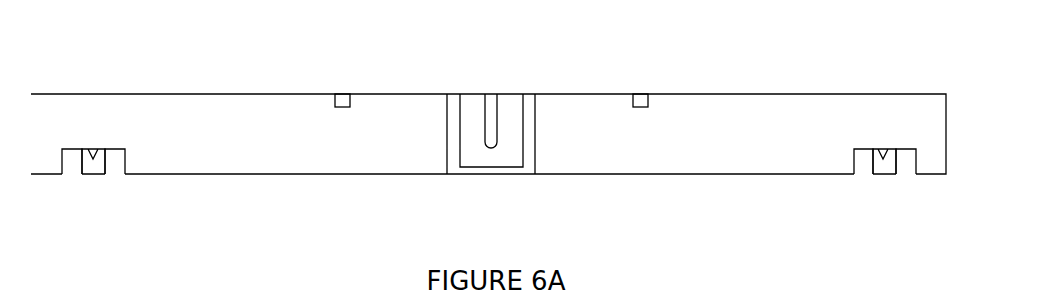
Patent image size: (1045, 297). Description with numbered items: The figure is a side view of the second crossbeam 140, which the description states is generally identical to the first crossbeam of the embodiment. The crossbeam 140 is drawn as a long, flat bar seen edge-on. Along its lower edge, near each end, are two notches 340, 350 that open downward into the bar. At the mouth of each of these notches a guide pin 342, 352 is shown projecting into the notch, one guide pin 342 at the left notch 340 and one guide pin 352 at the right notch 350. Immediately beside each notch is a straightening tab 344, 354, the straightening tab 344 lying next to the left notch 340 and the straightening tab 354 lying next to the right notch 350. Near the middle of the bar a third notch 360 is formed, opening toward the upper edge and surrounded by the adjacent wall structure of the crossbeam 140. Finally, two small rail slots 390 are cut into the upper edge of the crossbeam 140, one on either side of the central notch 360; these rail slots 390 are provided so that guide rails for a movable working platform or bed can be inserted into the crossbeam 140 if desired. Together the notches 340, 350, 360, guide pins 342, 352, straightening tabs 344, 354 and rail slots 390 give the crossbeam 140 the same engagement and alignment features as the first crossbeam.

The crossbeam 140 is at (258, 122).
The notch 340 is at (92, 156).
The guide pin 342 is at (92, 152).
The straightening tab 344 is at (113, 160).
The notch 350 is at (880, 158).
The guide pin 352 is at (884, 152).
The straightening tab 354 is at (903, 165).
The notch 360 is at (488, 107).
The rail slot 390 is at (491, 56).